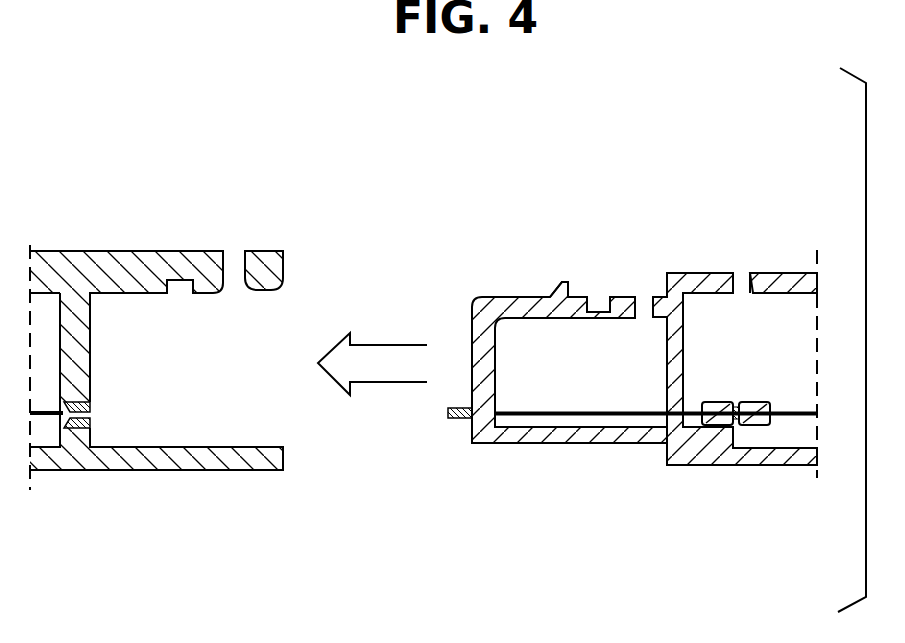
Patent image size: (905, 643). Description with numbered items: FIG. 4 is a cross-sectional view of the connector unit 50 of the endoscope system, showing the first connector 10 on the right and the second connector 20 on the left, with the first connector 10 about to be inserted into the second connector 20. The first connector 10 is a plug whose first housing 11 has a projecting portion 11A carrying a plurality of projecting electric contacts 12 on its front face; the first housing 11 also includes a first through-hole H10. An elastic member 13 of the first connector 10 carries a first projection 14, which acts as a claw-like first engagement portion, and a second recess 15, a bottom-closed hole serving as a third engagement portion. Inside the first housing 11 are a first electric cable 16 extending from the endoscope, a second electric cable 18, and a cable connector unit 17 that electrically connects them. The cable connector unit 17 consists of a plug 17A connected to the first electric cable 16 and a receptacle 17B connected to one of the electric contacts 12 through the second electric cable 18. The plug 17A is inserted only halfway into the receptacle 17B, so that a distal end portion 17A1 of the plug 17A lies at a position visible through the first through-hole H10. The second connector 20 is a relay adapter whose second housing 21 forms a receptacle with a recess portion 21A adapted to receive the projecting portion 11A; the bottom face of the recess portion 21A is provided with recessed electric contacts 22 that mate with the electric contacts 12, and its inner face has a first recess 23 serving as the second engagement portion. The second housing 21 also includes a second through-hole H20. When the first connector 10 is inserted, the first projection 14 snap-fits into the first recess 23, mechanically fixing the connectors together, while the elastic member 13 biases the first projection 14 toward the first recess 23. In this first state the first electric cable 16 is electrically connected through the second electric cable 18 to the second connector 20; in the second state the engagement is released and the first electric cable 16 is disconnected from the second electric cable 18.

The first connector 10 is at (540, 181).
The first housing 11 is at (781, 272).
The projecting portion 11A is at (522, 444).
The electric contacts 12 is at (462, 419).
The elastic member 13 is at (518, 296).
The first projection 14 is at (557, 292).
The second recess 15 is at (597, 301).
The first electric cable 16 is at (790, 427).
The cable connector unit 17 is at (762, 548).
The plug 17A is at (757, 427).
The distal end portion 17A1 is at (732, 417).
The receptacle 17B is at (700, 428).
The second electric cable 18 is at (612, 419).
The second connector 20 is at (277, 178).
The second housing 21 is at (158, 471).
The recess portion 21A is at (282, 417).
The electric contacts 22 is at (70, 429).
The first recess 23 is at (180, 289).
The connector unit 50 is at (748, 138).
The first through-hole H10 is at (740, 271).
The second through-hole H20 is at (233, 251).